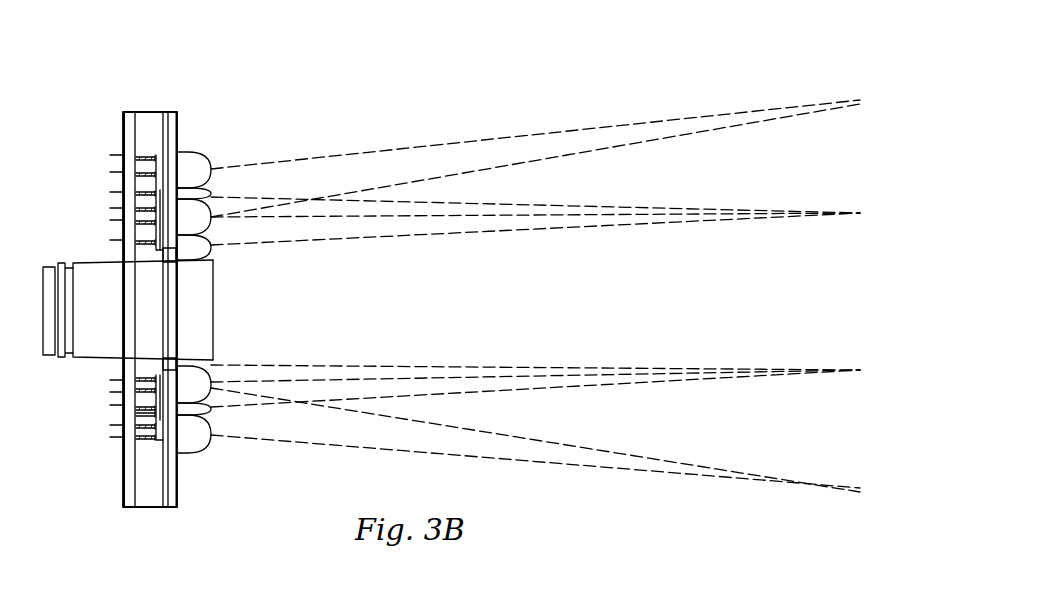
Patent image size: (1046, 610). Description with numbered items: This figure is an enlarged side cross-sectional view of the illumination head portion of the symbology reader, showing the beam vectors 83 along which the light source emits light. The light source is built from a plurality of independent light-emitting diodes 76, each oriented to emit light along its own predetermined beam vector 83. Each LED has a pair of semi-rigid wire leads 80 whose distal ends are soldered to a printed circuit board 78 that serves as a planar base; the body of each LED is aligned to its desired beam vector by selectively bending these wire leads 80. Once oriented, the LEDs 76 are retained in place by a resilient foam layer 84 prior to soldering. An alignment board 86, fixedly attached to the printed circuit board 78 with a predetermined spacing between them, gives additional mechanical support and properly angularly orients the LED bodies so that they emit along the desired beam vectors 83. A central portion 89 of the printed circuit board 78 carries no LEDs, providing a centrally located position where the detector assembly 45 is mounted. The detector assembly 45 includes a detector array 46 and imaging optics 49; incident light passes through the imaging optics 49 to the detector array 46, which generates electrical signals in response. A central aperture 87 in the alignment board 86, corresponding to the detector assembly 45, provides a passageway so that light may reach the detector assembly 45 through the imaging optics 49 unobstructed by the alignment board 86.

The detector assembly 45 is at (93, 359).
The detector array 46 is at (45, 264).
The imaging optics 49 is at (213, 305).
The light-emitting diodes 76 is at (190, 152).
The printed circuit board 78 is at (127, 510).
The semi-rigid wire leads 80 is at (147, 157).
The beam vector 83 is at (592, 131).
The resilient foam layer 84 is at (148, 111).
The alignment board 86 is at (174, 510).
The central aperture 87 is at (170, 250).
The central portion 89 is at (143, 372).